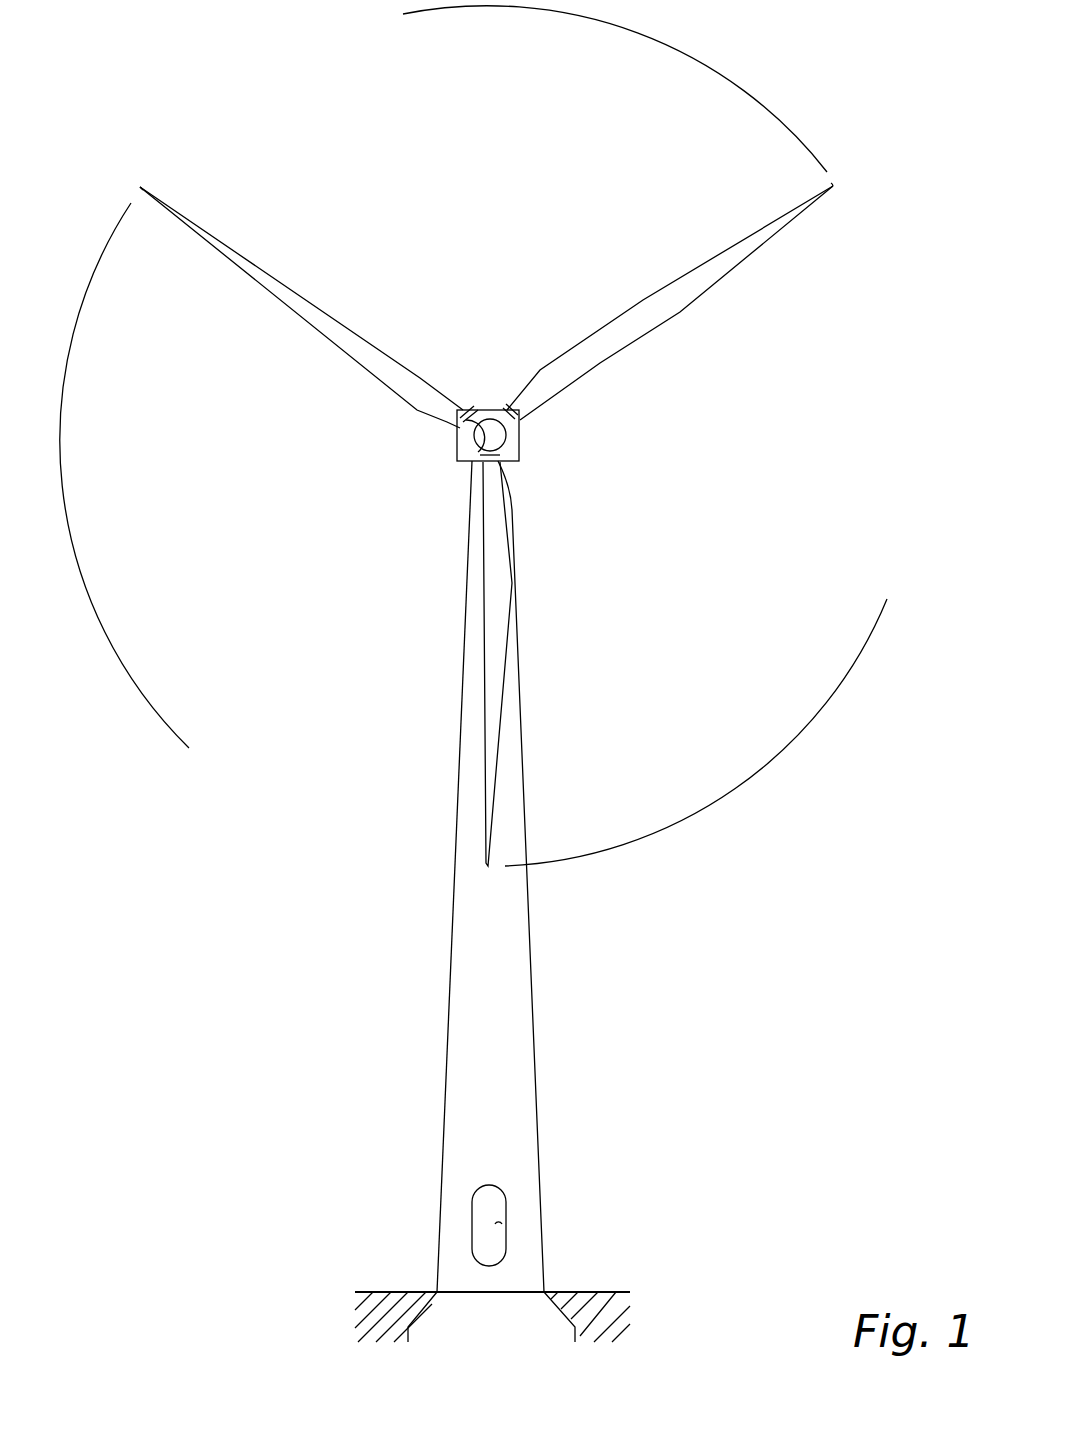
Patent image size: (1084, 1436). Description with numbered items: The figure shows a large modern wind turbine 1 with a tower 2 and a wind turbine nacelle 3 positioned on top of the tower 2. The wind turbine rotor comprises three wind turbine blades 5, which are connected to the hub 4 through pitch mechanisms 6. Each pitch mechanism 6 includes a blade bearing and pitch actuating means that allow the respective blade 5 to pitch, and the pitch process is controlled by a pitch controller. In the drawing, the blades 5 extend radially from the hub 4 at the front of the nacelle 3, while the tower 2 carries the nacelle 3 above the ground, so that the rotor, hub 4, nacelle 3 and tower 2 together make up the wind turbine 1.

The wind turbine 1 is at (360, 1018).
The tower 2 is at (502, 977).
The wind turbine nacelle 3 is at (513, 452).
The hub 4 is at (487, 433).
The wind turbine blades 5 is at (490, 705).
The pitch mechanisms 6 is at (462, 427).